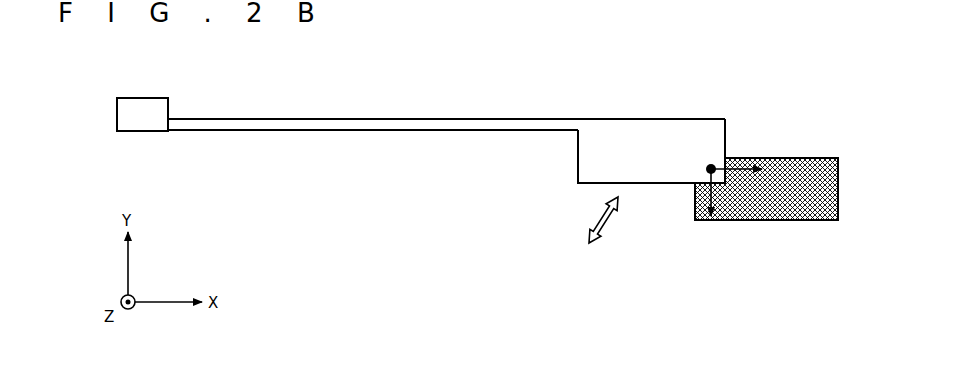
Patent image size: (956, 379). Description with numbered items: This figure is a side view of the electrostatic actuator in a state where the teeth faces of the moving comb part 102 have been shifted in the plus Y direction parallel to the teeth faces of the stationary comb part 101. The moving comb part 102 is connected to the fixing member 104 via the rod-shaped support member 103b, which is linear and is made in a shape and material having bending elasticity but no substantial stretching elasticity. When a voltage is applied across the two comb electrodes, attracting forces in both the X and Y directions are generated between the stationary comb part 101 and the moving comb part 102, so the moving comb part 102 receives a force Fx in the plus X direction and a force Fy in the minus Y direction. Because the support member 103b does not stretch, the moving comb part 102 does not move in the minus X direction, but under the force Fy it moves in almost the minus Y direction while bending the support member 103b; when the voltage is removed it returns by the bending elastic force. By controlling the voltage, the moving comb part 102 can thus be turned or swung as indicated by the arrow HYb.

The first comb electrode 101 is at (801, 157).
The second comb electrode 102 is at (590, 152).
The support member 103b is at (480, 118).
The fixing member 104 is at (146, 98).
The force Fx is at (742, 157).
The force Fy is at (695, 192).
The arrow HYb is at (612, 230).